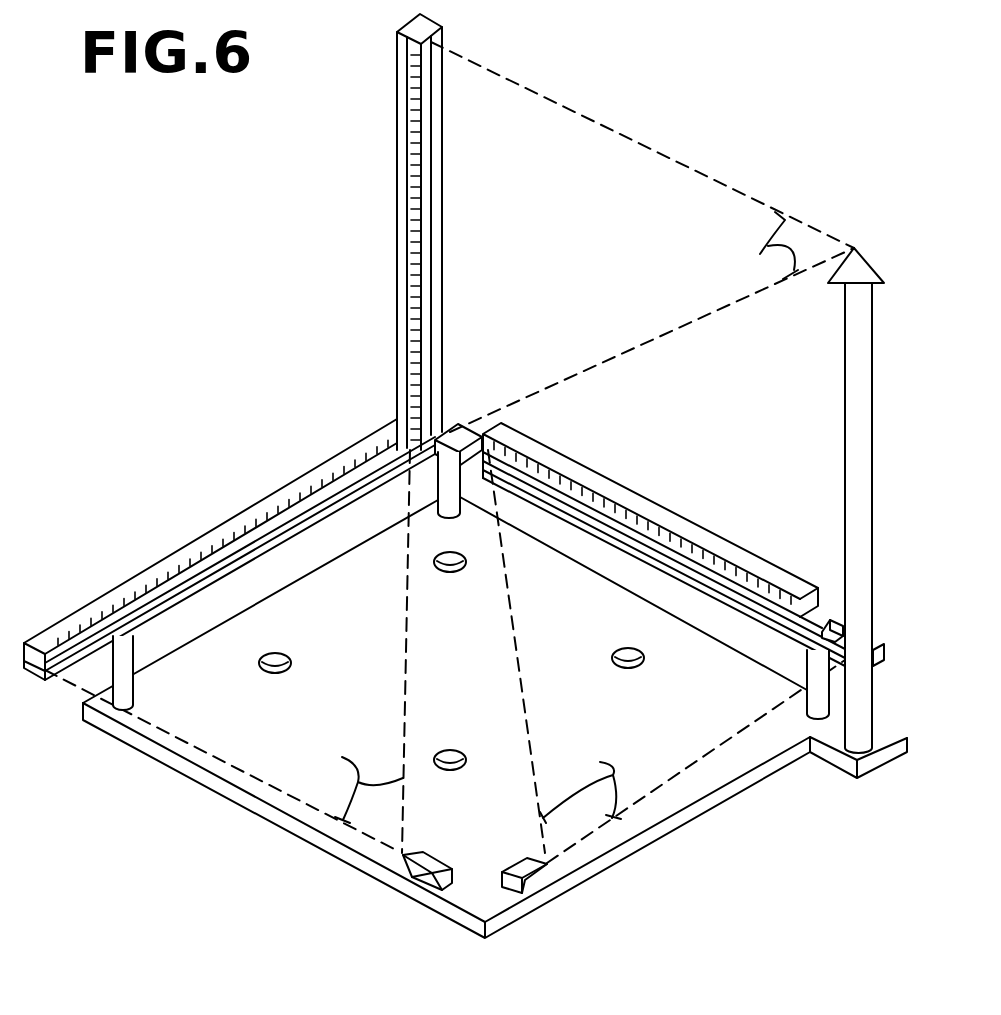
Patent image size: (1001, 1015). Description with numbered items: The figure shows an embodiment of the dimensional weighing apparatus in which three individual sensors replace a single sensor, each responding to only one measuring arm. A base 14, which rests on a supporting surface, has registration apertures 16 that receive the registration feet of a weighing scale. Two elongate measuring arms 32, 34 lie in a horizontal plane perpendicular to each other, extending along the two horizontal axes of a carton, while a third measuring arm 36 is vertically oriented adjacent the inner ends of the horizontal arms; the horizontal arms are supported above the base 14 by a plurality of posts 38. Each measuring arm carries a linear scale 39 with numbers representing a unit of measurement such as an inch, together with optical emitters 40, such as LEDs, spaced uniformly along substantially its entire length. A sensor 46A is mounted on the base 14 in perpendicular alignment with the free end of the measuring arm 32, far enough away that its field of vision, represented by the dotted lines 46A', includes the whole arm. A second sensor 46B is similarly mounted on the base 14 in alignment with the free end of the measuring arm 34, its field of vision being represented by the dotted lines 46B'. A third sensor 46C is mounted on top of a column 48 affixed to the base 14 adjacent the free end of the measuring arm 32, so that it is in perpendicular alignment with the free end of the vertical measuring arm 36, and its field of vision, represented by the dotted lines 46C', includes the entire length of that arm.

The base 14 is at (698, 785).
The registration apertures 16 is at (283, 652).
The measuring arm 32 is at (740, 545).
The measuring arm 34 is at (238, 524).
The measuring arm 36 is at (443, 232).
The posts 38 is at (136, 648).
The linear scale 39 is at (410, 157).
The optical emitters 40 is at (827, 595).
The sensor 46A is at (568, 904).
The dotted lines 46A' is at (590, 773).
The sensor 46B is at (393, 901).
The dotted lines 46B' is at (340, 778).
The sensor 46C is at (790, 315).
The dotted lines 46C' is at (741, 245).
The column 48 is at (843, 380).